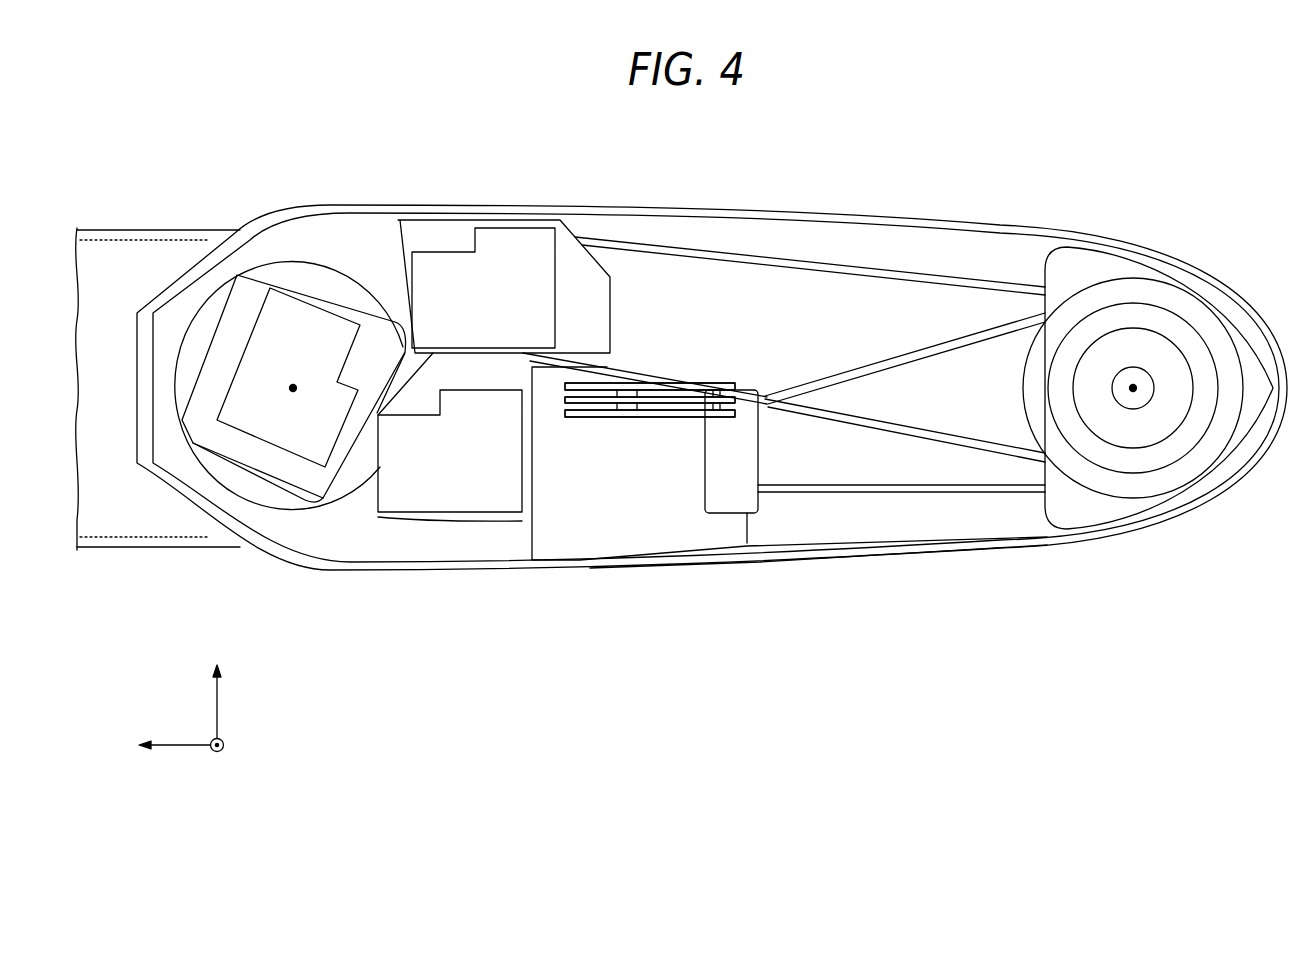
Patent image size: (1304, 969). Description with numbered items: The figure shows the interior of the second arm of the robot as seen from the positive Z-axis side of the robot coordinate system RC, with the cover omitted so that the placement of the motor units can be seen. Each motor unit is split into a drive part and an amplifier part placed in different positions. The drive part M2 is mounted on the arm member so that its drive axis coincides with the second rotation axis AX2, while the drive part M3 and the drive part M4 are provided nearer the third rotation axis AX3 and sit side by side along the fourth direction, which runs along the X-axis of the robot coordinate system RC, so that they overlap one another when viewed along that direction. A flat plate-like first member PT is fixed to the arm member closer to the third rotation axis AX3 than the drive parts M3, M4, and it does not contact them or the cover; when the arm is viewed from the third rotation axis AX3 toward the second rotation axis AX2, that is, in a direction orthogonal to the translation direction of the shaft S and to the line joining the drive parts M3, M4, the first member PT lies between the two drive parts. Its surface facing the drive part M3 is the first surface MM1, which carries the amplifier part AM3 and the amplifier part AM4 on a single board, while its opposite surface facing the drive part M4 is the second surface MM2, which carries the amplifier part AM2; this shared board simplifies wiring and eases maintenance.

The drive part M2 is at (306, 318).
The drive part M3 is at (500, 240).
The drive part M4 is at (457, 493).
The amplifier part AM2 is at (626, 425).
The amplifier part AM3 is at (643, 377).
The amplifier part AM4 is at (643, 377).
The first surface MM1 is at (675, 378).
The second surface MM2 is at (692, 418).
The first member PT is at (748, 393).
The shaft S is at (1137, 367).
The second rotation axis AX2 is at (293, 392).
The third rotation axis AX3 is at (1137, 392).
The robot coordinate system RC is at (210, 733).